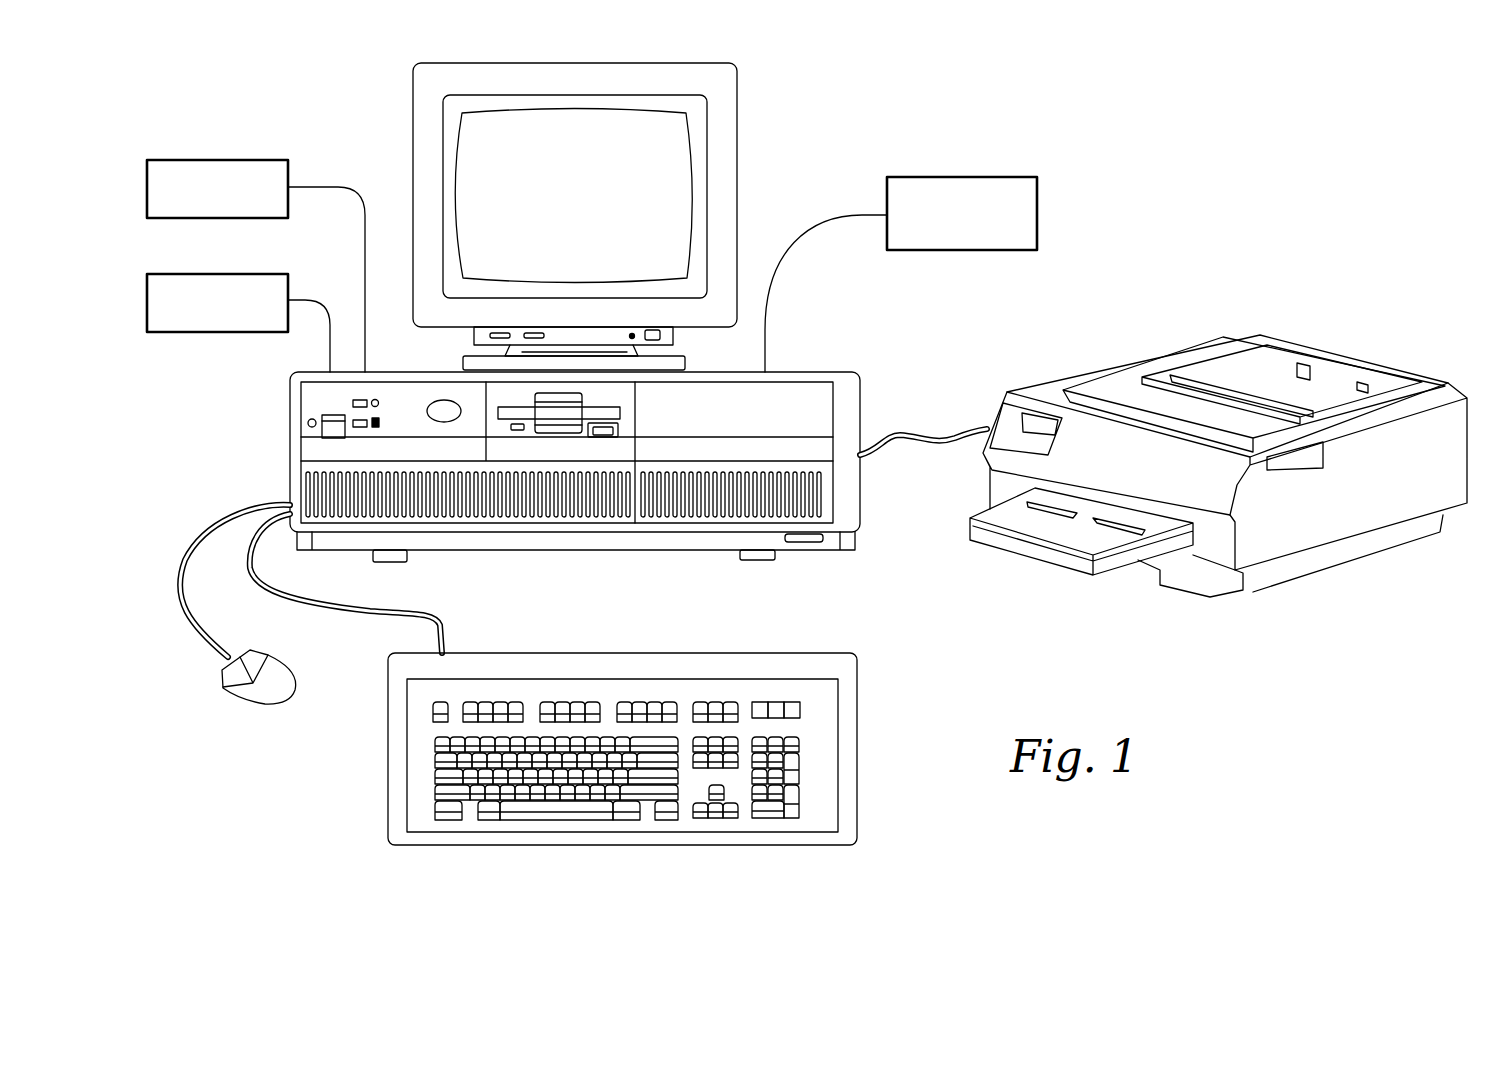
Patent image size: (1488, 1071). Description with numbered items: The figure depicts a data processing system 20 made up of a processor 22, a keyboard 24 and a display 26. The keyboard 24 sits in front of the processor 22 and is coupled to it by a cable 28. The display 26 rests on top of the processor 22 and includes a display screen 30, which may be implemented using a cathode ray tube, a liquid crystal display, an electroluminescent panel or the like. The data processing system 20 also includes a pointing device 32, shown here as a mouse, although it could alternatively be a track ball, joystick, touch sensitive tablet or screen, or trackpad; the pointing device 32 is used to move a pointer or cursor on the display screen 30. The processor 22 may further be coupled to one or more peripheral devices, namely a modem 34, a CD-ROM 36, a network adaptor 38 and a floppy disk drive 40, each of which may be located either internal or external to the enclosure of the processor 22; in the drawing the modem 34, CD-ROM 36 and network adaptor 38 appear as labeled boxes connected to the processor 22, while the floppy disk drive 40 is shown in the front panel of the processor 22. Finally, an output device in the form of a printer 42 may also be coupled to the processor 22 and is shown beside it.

The data processing system 20 is at (1178, 115).
The processor 22 is at (829, 355).
The keyboard 24 is at (700, 636).
The display 26 is at (752, 211).
The cable 28 is at (438, 618).
The display screen 30 is at (652, 142).
The pointing device 32 is at (250, 692).
The modem 34 is at (181, 160).
The CD-ROM 36 is at (181, 274).
The network adaptor 38 is at (1003, 177).
The floppy disk drive 40 is at (557, 433).
The printer 42 is at (999, 358).